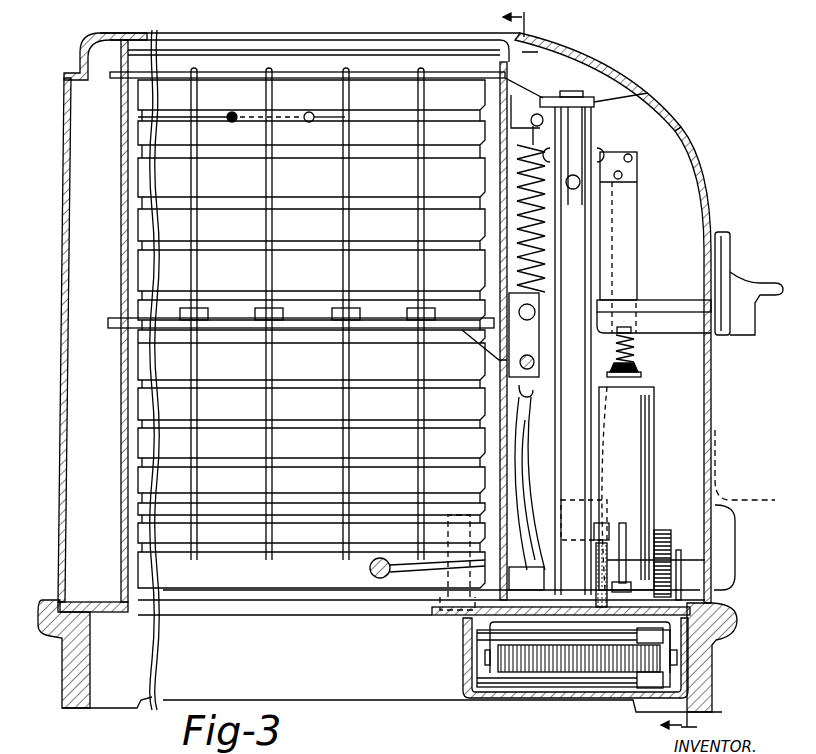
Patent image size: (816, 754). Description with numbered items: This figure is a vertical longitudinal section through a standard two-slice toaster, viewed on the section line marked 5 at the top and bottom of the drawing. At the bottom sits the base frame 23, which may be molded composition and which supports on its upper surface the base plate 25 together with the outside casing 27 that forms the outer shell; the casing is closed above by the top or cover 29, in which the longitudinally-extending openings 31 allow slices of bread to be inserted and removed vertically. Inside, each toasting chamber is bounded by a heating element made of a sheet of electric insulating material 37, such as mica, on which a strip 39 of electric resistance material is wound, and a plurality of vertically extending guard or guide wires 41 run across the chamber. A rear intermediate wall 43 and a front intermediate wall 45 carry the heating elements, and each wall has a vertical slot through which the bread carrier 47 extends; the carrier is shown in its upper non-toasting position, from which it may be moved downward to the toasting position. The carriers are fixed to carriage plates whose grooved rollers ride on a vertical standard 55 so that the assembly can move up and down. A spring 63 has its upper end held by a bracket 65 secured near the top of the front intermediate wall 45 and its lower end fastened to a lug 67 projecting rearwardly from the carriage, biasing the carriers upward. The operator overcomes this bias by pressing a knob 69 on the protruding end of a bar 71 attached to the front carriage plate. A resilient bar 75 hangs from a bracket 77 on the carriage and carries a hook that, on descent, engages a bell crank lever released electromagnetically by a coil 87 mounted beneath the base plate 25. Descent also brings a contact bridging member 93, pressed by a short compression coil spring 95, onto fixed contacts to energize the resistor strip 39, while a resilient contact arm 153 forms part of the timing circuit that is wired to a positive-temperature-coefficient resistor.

The section line 5- 5 is at (586, 372).
The base frame 23 is at (60, 700).
The base plate 25 is at (110, 613).
The outside casing 27 is at (63, 383).
The top or cover 29 is at (77, 53).
The longitudinally-extending openings 31 is at (352, 47).
The electric insulating sheet 37 is at (289, 224).
The strip of electric resistance material 39 is at (375, 198).
The guard or guide wires 41 is at (419, 264).
The rear intermediate wall 43 is at (121, 270).
The front intermediate wall 45 is at (499, 168).
The bread carrier 47 is at (304, 318).
The vertical standard 55 is at (591, 128).
The spring 63 is at (519, 227).
The bracket 65 is at (506, 141).
The lug 67 is at (519, 383).
The knob 69 is at (745, 278).
The bar 71 is at (657, 299).
The resilient bar 75 is at (637, 237).
The bracket 77 is at (607, 147).
The coil 87 is at (654, 452).
The contact bridging member 93 is at (641, 375).
The compression coil spring 95 is at (634, 347).
The resilient contact arm 153 is at (585, 481).